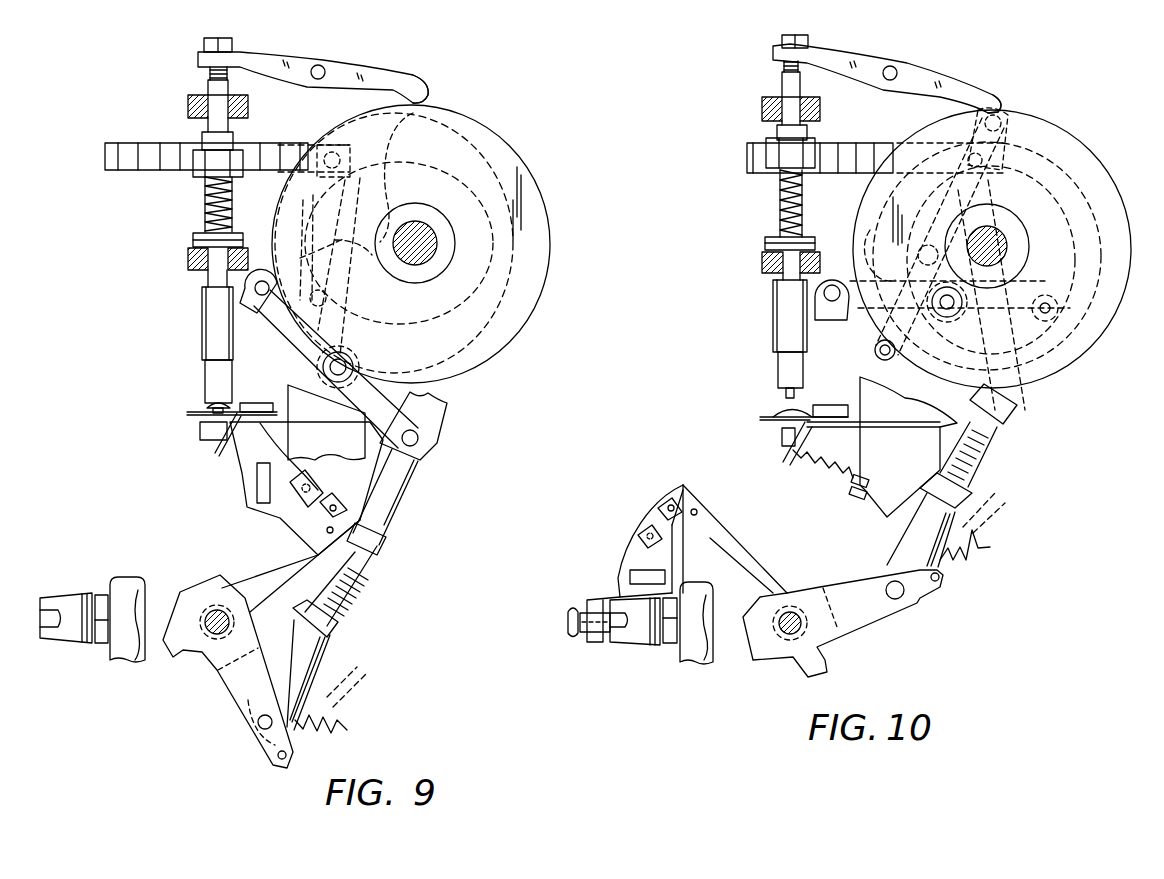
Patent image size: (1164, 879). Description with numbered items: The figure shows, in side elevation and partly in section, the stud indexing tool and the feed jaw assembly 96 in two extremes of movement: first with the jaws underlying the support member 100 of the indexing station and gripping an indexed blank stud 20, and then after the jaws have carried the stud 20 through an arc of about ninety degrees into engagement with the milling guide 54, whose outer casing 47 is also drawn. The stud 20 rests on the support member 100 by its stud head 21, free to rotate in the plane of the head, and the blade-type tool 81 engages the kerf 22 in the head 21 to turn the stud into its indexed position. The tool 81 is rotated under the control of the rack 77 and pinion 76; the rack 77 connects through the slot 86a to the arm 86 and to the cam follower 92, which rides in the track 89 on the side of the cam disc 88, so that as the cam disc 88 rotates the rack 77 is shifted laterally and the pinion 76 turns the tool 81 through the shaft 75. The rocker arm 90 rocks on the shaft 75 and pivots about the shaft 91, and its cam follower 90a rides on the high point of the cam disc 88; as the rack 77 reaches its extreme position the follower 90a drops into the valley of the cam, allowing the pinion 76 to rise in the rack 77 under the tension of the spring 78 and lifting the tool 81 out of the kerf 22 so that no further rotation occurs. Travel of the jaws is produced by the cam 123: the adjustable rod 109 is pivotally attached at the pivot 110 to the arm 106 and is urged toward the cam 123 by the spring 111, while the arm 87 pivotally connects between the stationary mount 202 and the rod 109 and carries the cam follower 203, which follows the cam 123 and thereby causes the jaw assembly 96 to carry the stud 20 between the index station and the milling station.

In FIG. 9, the blank stud 20 is at (208, 433).
In FIG. 10, the blank stud 20 is at (782, 430).
In FIG. 10, the stud head 21 is at (568, 624).
In FIG. 10, the kerf 22 is at (805, 402).
In FIG. 9, the casing 47 is at (126, 665).
In FIG. 10, the casing 47 is at (697, 666).
In FIG. 9, the milling guide 54 is at (52, 647).
In FIG. 10, the milling guide 54 is at (622, 648).
In FIG. 9, the shaft 75 is at (207, 80).
In FIG. 10, the shaft 75 is at (782, 80).
In FIG. 9, the pinion 76 is at (205, 162).
In FIG. 10, the pinion 76 is at (812, 150).
In FIG. 9, the rack 77 is at (108, 160).
In FIG. 10, the rack 77 is at (752, 158).
In FIG. 9, the spring 78 is at (205, 215).
In FIG. 10, the spring 78 is at (780, 212).
In FIG. 9, the tool 81 is at (206, 396).
In FIG. 10, the tool 81 is at (778, 396).
In FIG. 9, the arm 86 is at (336, 252).
In FIG. 10, the arm 86 is at (950, 188).
In FIG. 9, the slot 86a is at (338, 152).
In FIG. 10, the slot 86a is at (1006, 150).
In FIG. 9, the arm 87 is at (385, 382).
In FIG. 10, the arm 87 is at (983, 256).
In FIG. 9, the cam disc 88 is at (541, 268).
In FIG. 10, the cam disc 88 is at (1122, 318).
In FIG. 9, the track 89 is at (390, 322).
In FIG. 10, the track 89 is at (1035, 222).
In FIG. 9, the rocker arm 90 is at (386, 64).
In FIG. 10, the rocker arm 90 is at (960, 70).
In FIG. 9, the cam follower 90a is at (441, 96).
In FIG. 10, the cam follower 90a is at (1012, 103).
In FIG. 9, the shaft 91 is at (319, 64).
In FIG. 10, the shaft 91 is at (896, 68).
In FIG. 9, the cam follower 92 is at (345, 266).
In FIG. 9, the feed jaw assembly 96 is at (241, 478).
In FIG. 10, the feed jaw assembly 96 is at (680, 486).
In FIG. 9, the support member 100 is at (190, 413).
In FIG. 9, the arm 106 is at (222, 688).
In FIG. 10, the arm 106 is at (858, 630).
In FIG. 9, the adjustable rod 109 is at (410, 478).
In FIG. 10, the adjustable rod 109 is at (1018, 395).
In FIG. 9, the pivot 110 is at (262, 732).
In FIG. 10, the pivot 110 is at (905, 595).
In FIG. 9, the spring 111 is at (347, 703).
In FIG. 10, the spring 111 is at (989, 526).
In FIG. 9, the cam 123 is at (412, 146).
In FIG. 10, the cam 123 is at (862, 228).
In FIG. 9, the stationary mount 202 is at (256, 318).
In FIG. 10, the stationary mount 202 is at (822, 322).
In FIG. 9, the cam follower 203 is at (325, 369).
In FIG. 10, the cam follower 203 is at (992, 302).